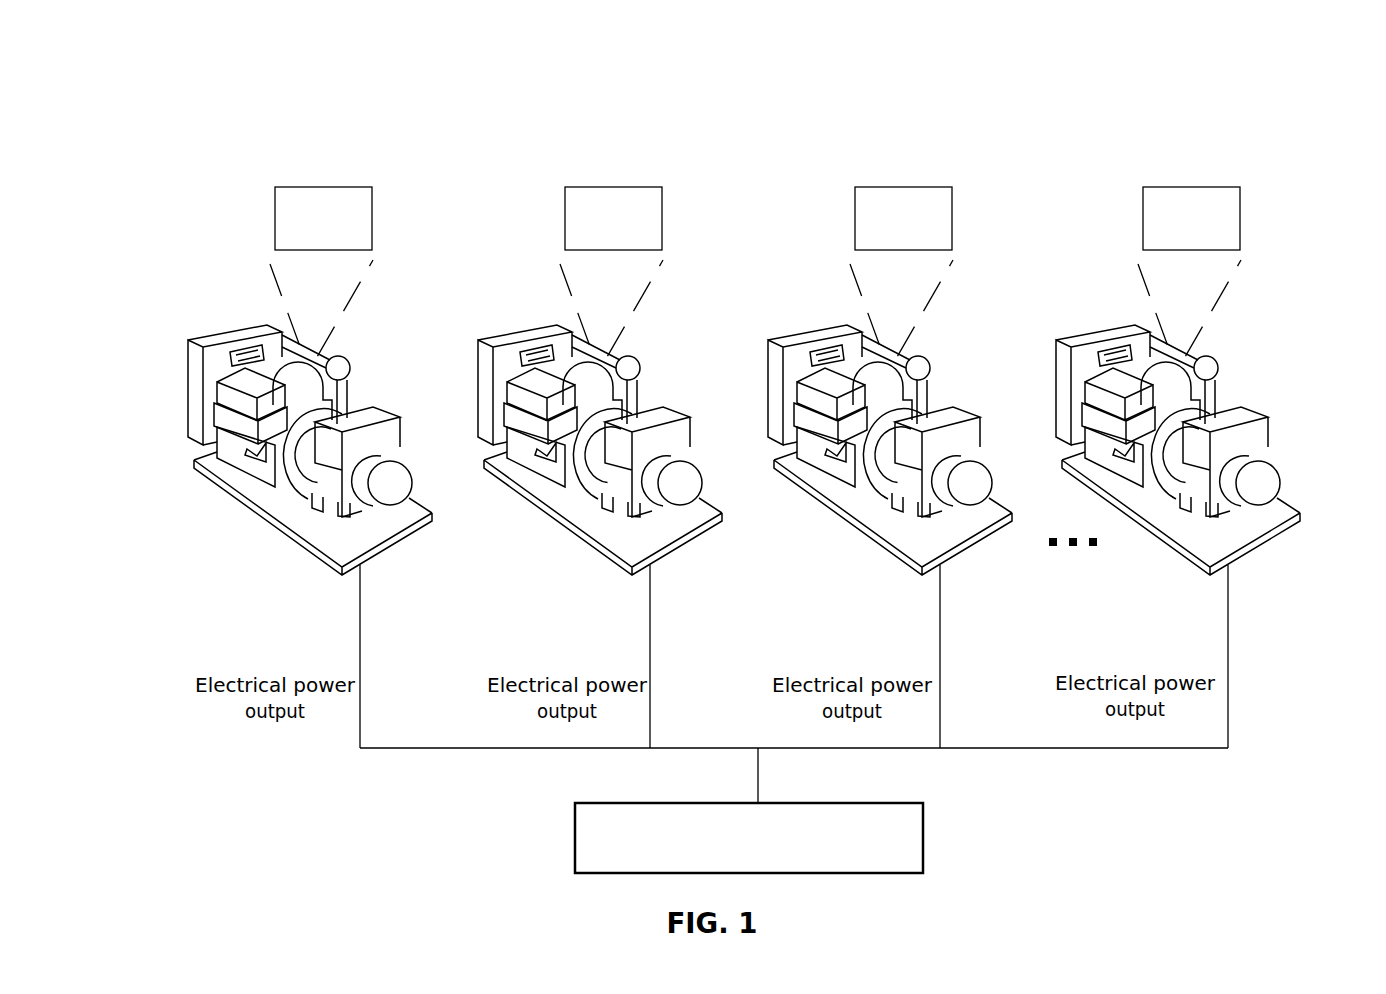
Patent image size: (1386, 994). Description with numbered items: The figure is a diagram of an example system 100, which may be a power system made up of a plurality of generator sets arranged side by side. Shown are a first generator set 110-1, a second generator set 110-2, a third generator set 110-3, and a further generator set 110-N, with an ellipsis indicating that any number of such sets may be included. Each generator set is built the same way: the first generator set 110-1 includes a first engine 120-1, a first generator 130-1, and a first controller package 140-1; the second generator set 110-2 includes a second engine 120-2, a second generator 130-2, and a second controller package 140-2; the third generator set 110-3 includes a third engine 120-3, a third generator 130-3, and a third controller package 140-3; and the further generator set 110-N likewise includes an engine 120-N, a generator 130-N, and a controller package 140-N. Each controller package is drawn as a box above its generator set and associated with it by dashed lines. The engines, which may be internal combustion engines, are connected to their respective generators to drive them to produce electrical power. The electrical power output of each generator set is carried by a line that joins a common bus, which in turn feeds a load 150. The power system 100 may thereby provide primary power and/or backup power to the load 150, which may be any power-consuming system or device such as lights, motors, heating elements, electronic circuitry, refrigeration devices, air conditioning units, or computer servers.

The system 100 is at (226, 40).
The first generator set 110-1 is at (387, 550).
The second generator set 110-2 is at (606, 538).
The third generator set 110-3 is at (896, 538).
The generator set 110-N is at (1185, 538).
The first engine 120-1 is at (207, 408).
The second engine 120-2 is at (548, 395).
The third engine 120-3 is at (837, 395).
The engine 120-N is at (1126, 395).
The first generator 130-1 is at (392, 450).
The second generator 130-2 is at (676, 436).
The third generator 130-3 is at (966, 436).
The generator 130-N is at (1255, 436).
The first controller package 140-1 is at (322, 187).
The second controller package 140-2 is at (617, 230).
The third controller package 140-3 is at (907, 230).
The controller package 140-N is at (1196, 230).
The load 150 is at (731, 861).